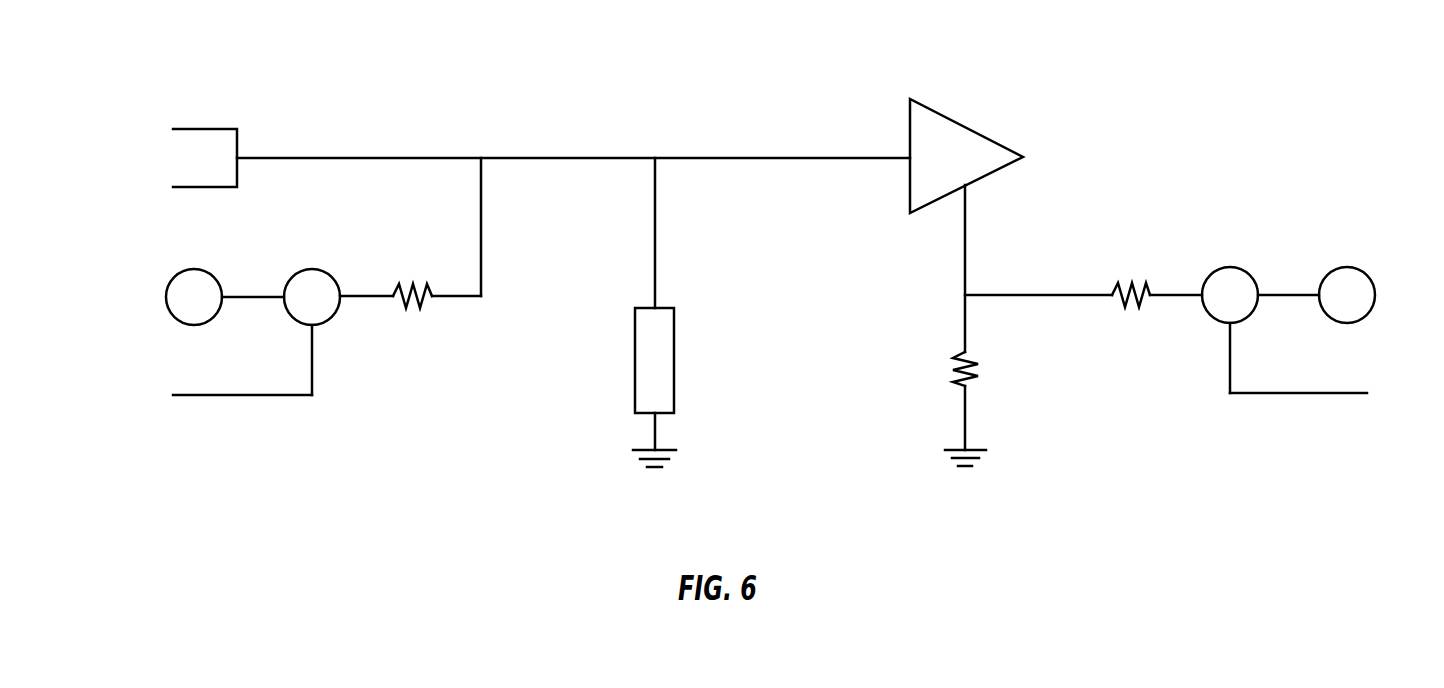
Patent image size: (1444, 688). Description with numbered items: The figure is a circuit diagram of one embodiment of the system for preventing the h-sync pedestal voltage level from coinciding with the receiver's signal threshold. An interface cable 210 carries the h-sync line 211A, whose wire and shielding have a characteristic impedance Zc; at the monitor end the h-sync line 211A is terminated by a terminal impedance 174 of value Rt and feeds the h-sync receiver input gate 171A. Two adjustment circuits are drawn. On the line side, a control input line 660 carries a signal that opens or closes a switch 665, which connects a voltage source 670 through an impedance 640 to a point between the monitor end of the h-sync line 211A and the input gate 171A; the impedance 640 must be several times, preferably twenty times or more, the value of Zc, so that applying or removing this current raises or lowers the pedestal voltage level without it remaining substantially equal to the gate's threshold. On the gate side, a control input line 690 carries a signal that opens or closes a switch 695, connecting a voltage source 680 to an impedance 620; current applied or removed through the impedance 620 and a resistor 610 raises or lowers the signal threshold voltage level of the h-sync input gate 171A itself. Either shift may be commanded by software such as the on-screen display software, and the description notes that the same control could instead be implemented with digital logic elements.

The interface cable 210 is at (230, 138).
The h-sync line 211A is at (573, 137).
The h-sync receiver input gate 171A is at (977, 167).
The terminal impedance 174 is at (697, 360).
The resistor 610 is at (1009, 355).
The impedance 620 is at (1156, 272).
The impedance 640 is at (438, 319).
The control input line 660 is at (247, 416).
The switch 665 is at (342, 277).
The voltage source 670 is at (225, 277).
The voltage source 680 is at (1374, 273).
The control input line 690 is at (1298, 413).
The switch 695 is at (1260, 273).